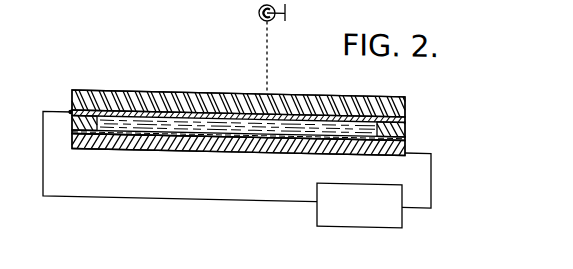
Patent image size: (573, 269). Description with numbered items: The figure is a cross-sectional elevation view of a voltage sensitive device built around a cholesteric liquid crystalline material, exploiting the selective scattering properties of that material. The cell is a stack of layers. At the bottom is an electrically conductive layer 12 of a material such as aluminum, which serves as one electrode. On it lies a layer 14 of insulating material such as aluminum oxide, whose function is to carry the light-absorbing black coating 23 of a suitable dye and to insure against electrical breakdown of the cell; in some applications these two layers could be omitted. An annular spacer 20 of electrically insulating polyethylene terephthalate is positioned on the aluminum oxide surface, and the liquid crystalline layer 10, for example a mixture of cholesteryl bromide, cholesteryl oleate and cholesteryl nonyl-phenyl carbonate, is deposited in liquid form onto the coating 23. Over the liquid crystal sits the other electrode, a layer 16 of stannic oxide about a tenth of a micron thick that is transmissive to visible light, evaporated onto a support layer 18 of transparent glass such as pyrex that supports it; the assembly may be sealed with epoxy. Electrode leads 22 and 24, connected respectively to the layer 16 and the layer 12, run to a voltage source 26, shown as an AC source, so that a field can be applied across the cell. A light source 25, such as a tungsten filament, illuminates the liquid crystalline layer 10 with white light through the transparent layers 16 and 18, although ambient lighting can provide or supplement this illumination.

The liquid crystalline layer 10 is at (294, 112).
The electrically conductive layer 12 is at (98, 148).
The insulating layer 14 is at (140, 134).
The light-transmissive conductive layer 16 is at (405, 113).
The support layer 18 is at (115, 95).
The annular spacer 20 is at (405, 123).
The electrode lead 22 is at (43, 164).
The black coating 23 is at (407, 136).
The electrode lead 24 is at (431, 173).
The light source 25 is at (259, 10).
The voltage source 26 is at (317, 179).